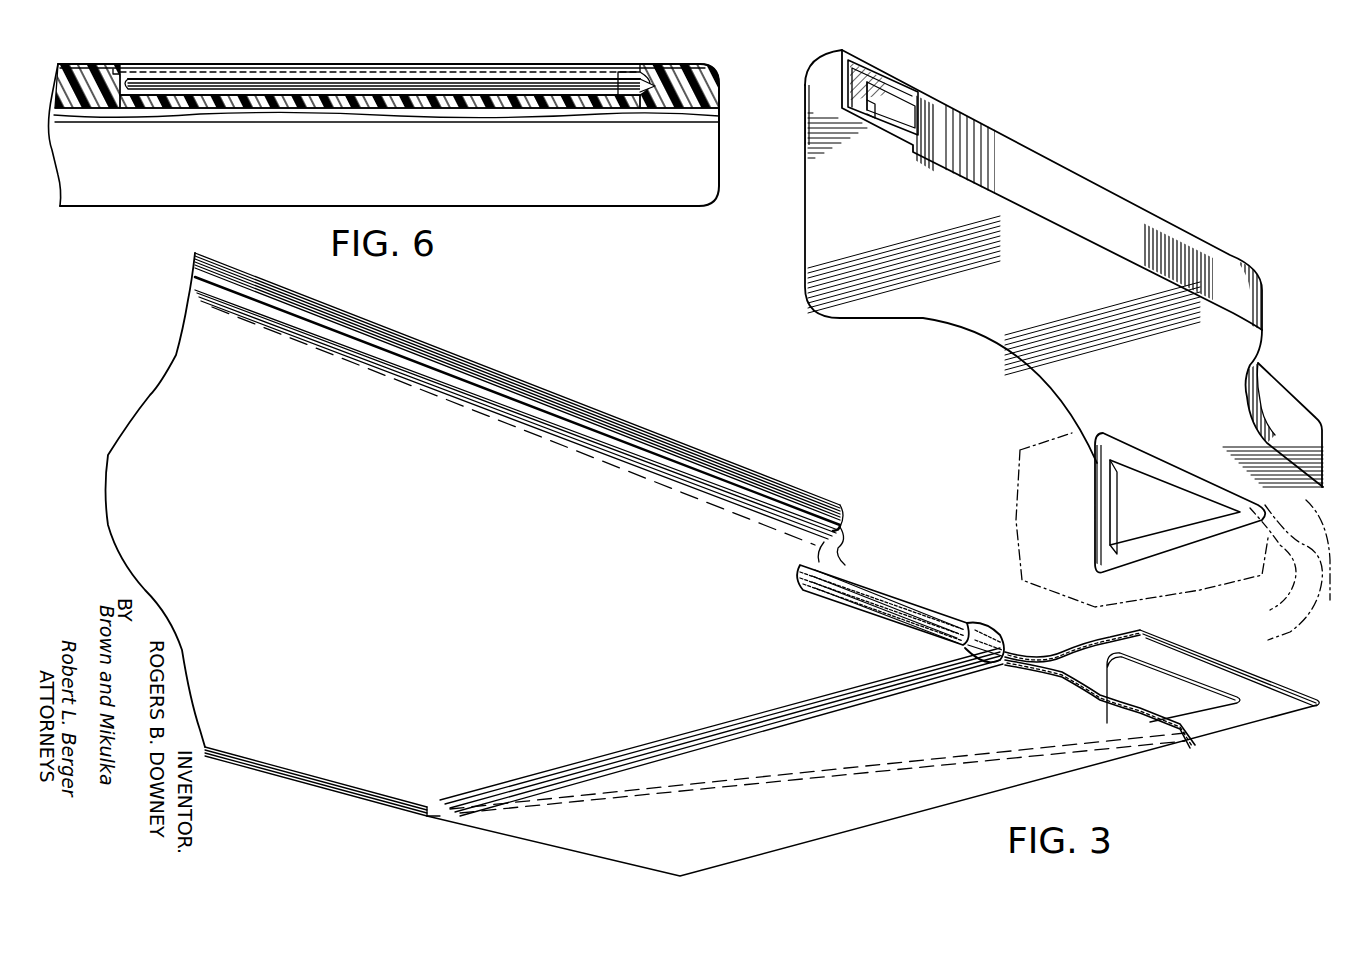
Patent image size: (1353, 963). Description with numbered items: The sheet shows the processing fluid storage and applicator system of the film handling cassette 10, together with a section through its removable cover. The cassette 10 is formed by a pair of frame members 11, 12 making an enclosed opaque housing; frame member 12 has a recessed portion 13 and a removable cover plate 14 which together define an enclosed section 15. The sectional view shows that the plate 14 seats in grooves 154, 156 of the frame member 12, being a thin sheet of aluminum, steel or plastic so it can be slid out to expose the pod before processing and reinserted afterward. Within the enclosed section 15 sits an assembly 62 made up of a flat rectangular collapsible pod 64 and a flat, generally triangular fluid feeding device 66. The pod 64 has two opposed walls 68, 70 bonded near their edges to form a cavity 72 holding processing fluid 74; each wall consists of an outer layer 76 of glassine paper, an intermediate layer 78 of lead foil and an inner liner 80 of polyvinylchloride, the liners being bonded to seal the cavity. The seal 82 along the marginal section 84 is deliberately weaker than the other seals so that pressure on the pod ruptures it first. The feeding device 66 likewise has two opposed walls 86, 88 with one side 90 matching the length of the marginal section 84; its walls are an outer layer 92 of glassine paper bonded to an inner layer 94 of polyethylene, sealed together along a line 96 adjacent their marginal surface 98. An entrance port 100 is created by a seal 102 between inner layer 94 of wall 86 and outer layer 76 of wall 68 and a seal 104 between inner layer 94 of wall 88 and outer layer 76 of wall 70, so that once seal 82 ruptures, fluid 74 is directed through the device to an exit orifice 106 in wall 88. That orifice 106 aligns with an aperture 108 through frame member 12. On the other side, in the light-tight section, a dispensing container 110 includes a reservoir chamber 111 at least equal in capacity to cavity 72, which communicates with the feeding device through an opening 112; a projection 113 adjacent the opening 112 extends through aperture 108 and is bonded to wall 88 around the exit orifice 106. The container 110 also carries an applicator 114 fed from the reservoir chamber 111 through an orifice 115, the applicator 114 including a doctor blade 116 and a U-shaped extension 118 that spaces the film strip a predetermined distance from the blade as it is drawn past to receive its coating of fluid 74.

In FIG. 6, the film handling cassette 10 is at (172, 214).
In FIG. 6, the frame member 11 is at (714, 170).
In FIG. 6, the frame member 12 is at (62, 68).
In FIG. 3, the frame member 12 is at (1280, 638).
In FIG. 6, the recessed portion 13 is at (116, 94).
In FIG. 6, the removable cover plate 14 is at (455, 68).
In FIG. 6, the enclosed section 15 is at (700, 66).
In FIG. 3, the assembly 62 is at (465, 343).
In FIG. 6, the collapsible pod 64 is at (330, 103).
In FIG. 3, the collapsible pod 64 is at (362, 775).
In FIG. 3, the fluid feeding device 66 is at (750, 775).
In FIG. 3, the wall 68 is at (825, 598).
In FIG. 3, the wall 70 is at (835, 560).
In FIG. 3, the cavity 72 is at (860, 585).
In FIG. 3, the processing fluid 74 is at (816, 592).
In FIG. 3, the outer layer 76 is at (880, 590).
In FIG. 3, the intermediate layer 78 is at (895, 600).
In FIG. 3, the inner liner 80 is at (925, 605).
In FIG. 3, the seal 82 is at (970, 622).
In FIG. 3, the marginal section 84 is at (1010, 650).
In FIG. 3, the wall 86 is at (1005, 672).
In FIG. 3, the wall 88 is at (998, 640).
In FIG. 3, the side 90 is at (490, 832).
In FIG. 3, the outer layer 92 is at (1020, 672).
In FIG. 3, the inner layer 94 is at (995, 668).
In FIG. 3, the line 96 is at (835, 765).
In FIG. 3, the marginal surface 98 is at (1265, 693).
In FIG. 3, the entrance port 100 is at (1015, 656).
In FIG. 3, the seal 102 is at (985, 662).
In FIG. 3, the seal 104 is at (990, 632).
In FIG. 3, the exit orifice 106 is at (1200, 718).
In FIG. 3, the aperture 108 is at (1197, 600).
In FIG. 3, the dispensing container 110 is at (965, 340).
In FIG. 3, the reservoir chamber 111 is at (1085, 196).
In FIG. 3, the opening 112 is at (1150, 530).
In FIG. 3, the projection 113 is at (1255, 573).
In FIG. 3, the applicator 114 is at (895, 78).
In FIG. 3, the orifice 115 is at (862, 88).
In FIG. 3, the doctor blade 116 is at (868, 105).
In FIG. 3, the U-shaped extension 118 is at (920, 88).
In FIG. 6, the groove 154 is at (120, 75).
In FIG. 6, the groove 156 is at (672, 72).